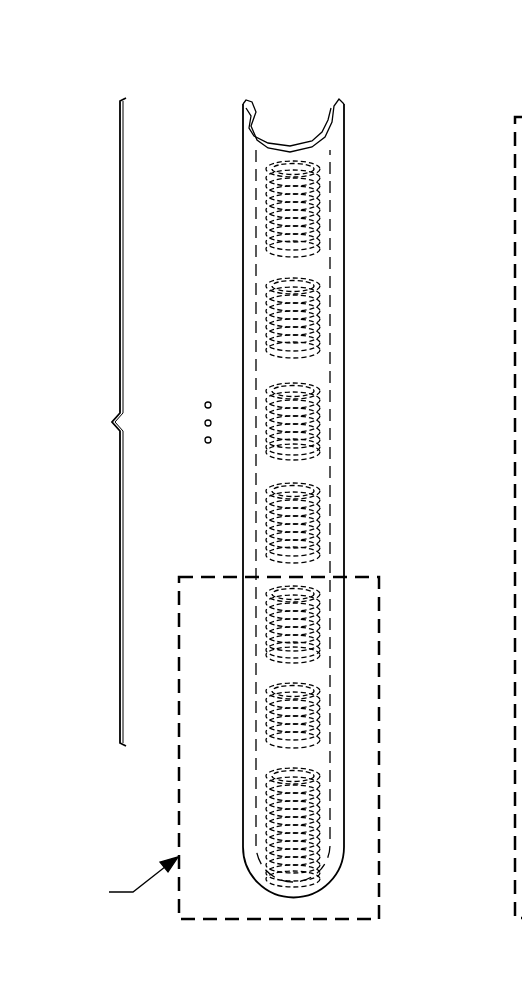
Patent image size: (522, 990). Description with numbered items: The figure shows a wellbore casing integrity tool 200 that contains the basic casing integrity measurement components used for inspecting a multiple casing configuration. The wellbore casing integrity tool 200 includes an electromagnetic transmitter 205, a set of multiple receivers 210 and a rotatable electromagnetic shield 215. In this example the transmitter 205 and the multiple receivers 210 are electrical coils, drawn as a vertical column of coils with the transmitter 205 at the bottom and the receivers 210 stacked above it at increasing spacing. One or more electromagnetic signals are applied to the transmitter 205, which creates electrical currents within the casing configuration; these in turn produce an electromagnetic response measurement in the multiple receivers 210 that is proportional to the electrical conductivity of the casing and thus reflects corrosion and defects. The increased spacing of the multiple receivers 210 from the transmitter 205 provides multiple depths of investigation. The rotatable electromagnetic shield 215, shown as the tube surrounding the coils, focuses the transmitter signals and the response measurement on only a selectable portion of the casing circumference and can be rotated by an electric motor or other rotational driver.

The wellbore casing integrity tool 200 is at (186, 68).
The electromagnetic transmitter 205 is at (320, 800).
The multiple receivers 210 is at (91, 422).
The rotatable electromagnetic shield 215 is at (344, 386).